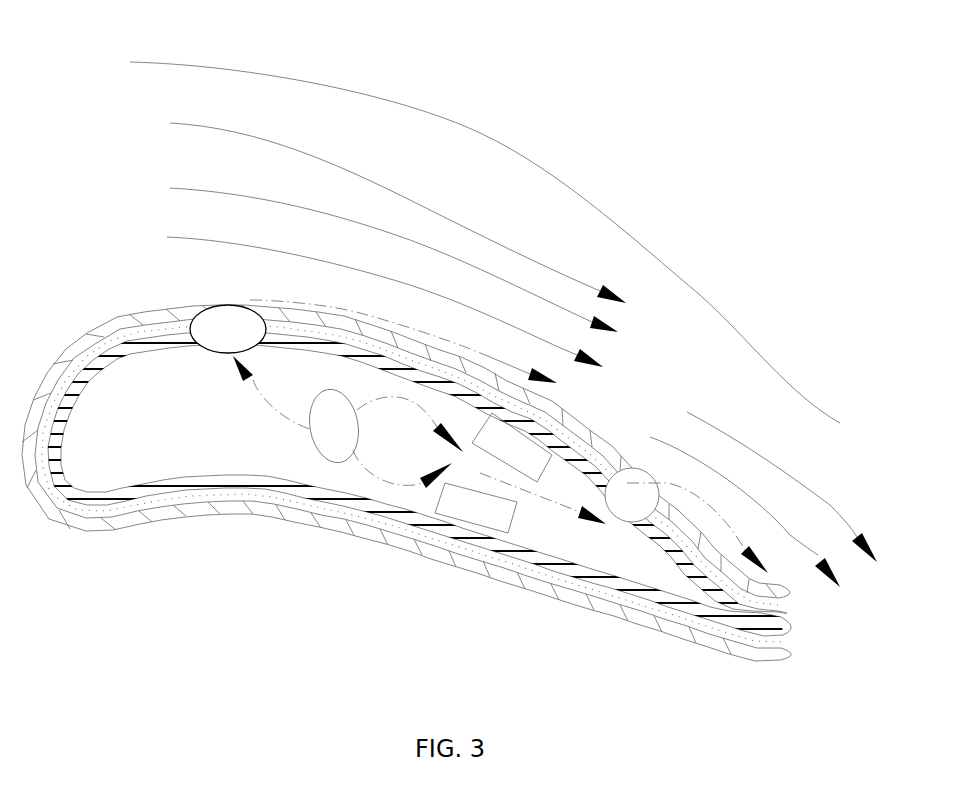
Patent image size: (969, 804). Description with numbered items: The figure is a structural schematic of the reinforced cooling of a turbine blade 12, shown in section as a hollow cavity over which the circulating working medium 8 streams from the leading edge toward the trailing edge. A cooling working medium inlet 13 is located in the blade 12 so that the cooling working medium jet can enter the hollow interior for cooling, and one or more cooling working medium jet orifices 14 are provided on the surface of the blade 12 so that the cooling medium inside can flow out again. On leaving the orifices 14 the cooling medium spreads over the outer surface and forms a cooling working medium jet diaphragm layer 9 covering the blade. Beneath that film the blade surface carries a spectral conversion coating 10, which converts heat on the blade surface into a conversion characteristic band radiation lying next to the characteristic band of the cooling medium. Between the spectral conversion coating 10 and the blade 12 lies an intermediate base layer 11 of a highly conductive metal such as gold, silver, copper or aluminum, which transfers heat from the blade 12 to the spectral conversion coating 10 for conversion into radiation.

The circulating working medium 8 is at (412, 238).
The cooling working medium jet diaphragm layer 9 is at (490, 357).
The spectral conversion coating 10 is at (413, 547).
The intermediate base layer 11 is at (467, 551).
The blade 12 is at (513, 550).
The cooling working medium inlet 13 is at (331, 428).
The cooling working medium jet orifice 14 is at (227, 330).